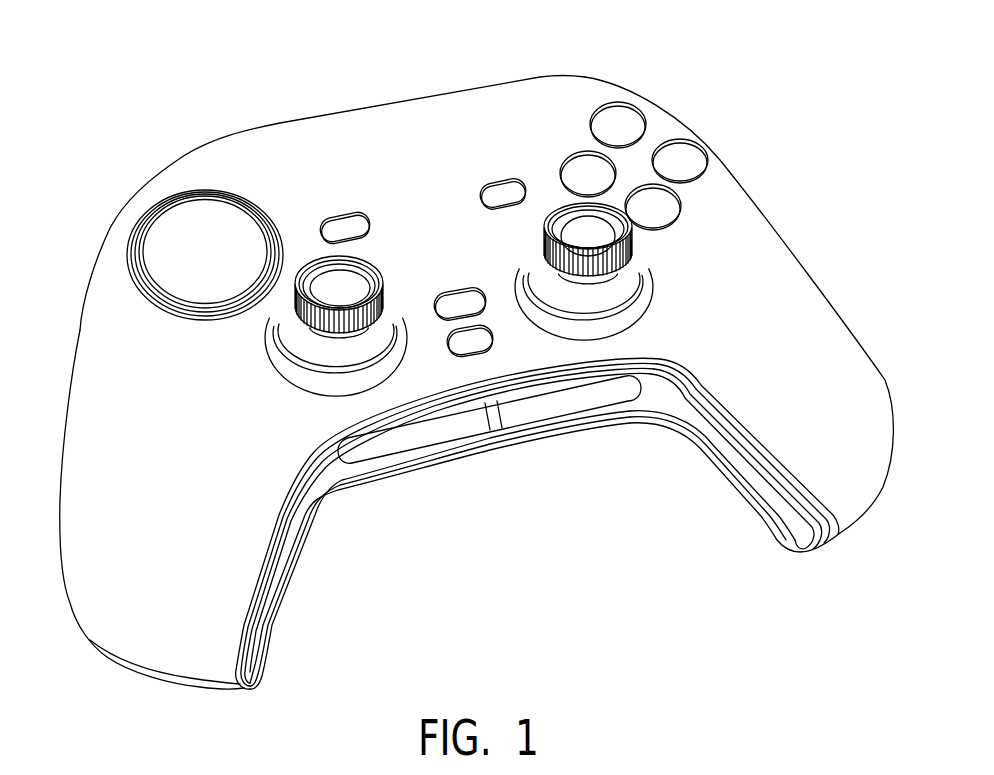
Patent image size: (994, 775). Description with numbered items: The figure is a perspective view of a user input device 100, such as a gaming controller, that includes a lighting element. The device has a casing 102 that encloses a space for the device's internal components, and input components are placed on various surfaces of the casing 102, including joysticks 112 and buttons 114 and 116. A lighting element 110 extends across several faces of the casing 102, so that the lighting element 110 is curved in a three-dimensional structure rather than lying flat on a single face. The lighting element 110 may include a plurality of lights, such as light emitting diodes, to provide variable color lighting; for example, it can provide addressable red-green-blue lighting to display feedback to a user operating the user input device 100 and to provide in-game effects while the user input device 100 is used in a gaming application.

The user input device 100 is at (110, 130).
The casing 102 is at (783, 329).
The lighting element 110 is at (745, 446).
The joystick 112 is at (592, 232).
The button 114 is at (535, 410).
The button 116 is at (497, 340).